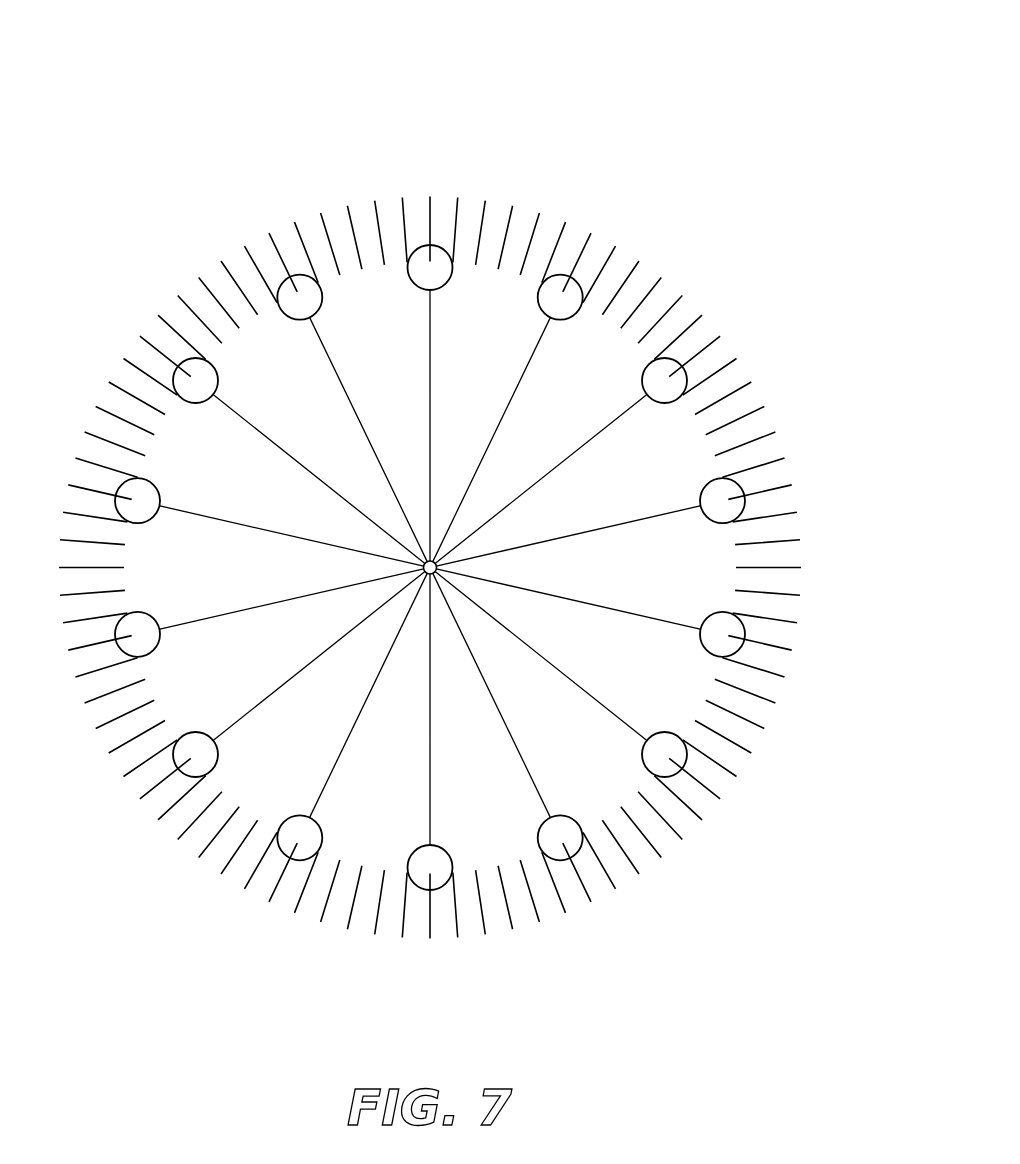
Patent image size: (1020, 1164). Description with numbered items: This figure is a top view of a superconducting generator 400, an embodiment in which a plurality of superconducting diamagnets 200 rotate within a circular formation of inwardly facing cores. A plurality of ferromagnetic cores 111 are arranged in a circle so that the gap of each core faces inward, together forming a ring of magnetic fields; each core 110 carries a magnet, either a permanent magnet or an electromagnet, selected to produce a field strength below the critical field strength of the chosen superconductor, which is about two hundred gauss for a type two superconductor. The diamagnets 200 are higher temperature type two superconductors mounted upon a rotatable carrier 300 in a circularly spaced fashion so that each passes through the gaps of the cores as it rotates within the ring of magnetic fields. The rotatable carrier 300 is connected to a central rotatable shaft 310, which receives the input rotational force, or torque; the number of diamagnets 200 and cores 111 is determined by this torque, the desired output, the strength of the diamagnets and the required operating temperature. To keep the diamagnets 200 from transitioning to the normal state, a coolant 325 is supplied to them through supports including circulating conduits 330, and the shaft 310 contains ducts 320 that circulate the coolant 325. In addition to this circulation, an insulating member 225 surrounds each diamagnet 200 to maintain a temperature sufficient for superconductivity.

The superconducting generator 400 is at (688, 104).
The core 110 is at (745, 749).
The ferromagnetic cores 111 is at (684, 300).
The superconducting diamagnet 200 is at (735, 631).
The insulating member 225 is at (742, 647).
The rotatable carrier 300 is at (424, 562).
The rotatable shaft 310 is at (436, 562).
The ducts 320 is at (424, 573).
The coolant 325 is at (503, 720).
The circulating conduits 330 is at (358, 718).